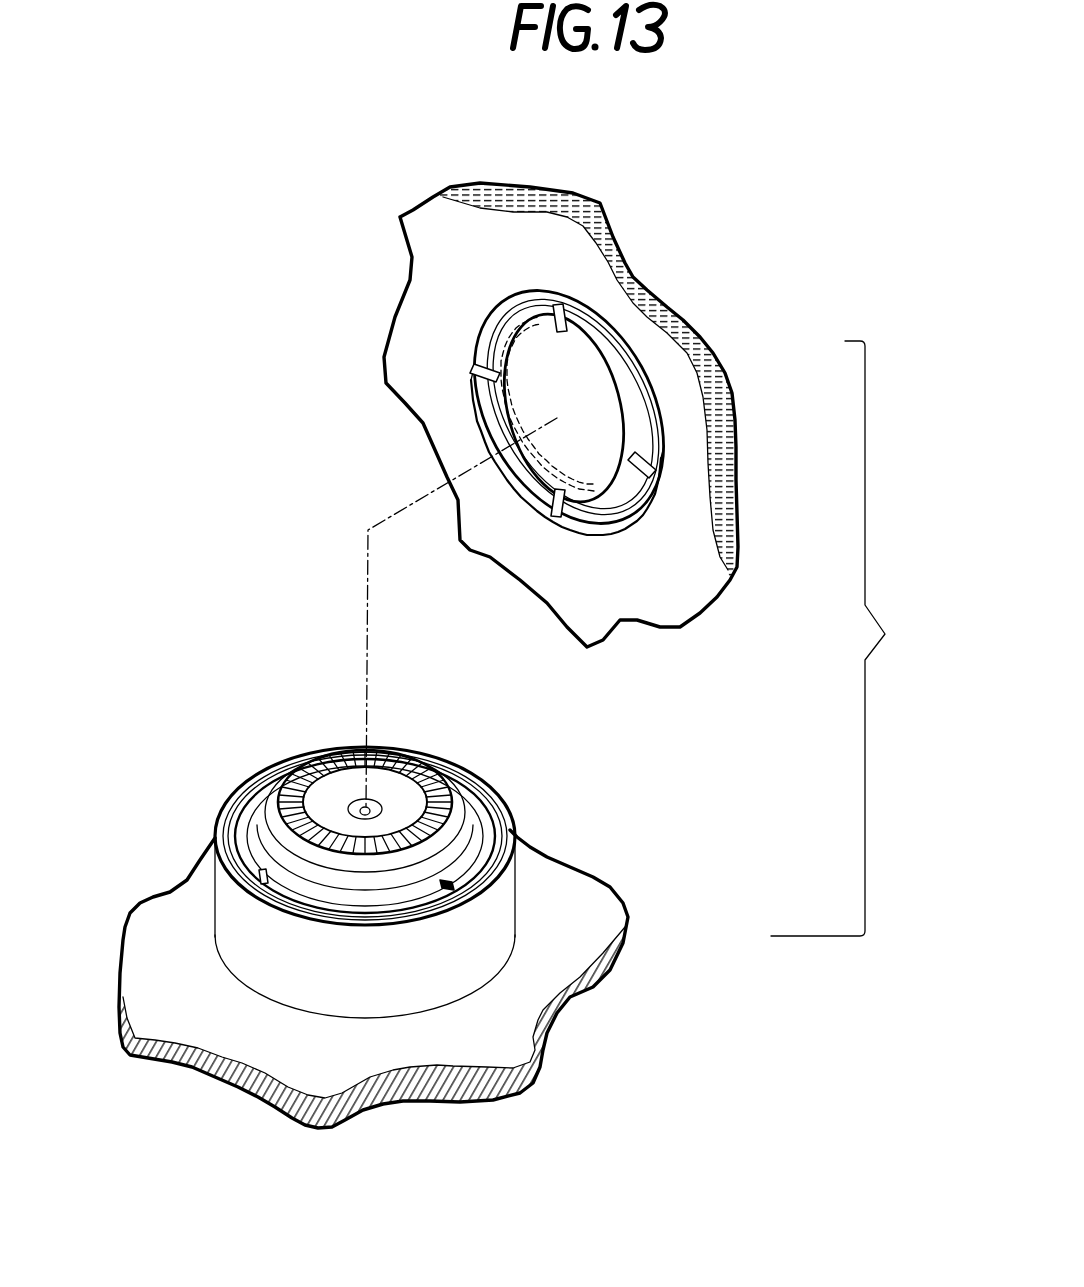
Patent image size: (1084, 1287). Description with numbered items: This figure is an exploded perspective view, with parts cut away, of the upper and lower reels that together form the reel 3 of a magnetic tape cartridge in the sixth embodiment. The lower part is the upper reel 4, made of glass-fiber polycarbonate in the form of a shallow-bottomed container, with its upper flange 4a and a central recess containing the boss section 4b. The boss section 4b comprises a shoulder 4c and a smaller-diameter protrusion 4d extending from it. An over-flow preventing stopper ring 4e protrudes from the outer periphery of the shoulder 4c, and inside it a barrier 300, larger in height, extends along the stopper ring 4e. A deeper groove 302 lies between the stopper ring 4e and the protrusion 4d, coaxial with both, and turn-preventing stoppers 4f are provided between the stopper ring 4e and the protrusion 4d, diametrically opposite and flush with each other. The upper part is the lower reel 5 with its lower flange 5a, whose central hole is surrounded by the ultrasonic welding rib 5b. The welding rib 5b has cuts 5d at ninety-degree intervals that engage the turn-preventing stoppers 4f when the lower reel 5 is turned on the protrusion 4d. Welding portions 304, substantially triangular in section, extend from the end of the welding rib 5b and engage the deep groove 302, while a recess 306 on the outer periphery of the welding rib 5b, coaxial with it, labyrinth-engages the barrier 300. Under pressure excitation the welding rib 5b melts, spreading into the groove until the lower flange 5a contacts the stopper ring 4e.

The reel 3 is at (853, 638).
The upper reel 4 is at (627, 927).
The upper flange 4a is at (520, 1022).
The boss section 4b is at (519, 907).
The shoulder 4c is at (450, 772).
The protrusion 4d is at (383, 777).
The stopper ring 4e is at (313, 915).
The turn-preventing stoppers 4f is at (263, 781).
The lower reel 5 is at (737, 350).
The lower flange 5a is at (642, 282).
The ultrasonic welding rib 5b is at (612, 362).
The cuts 5d is at (556, 310).
The barrier 300 is at (418, 910).
The groove 302 is at (267, 867).
The welding portions 304 is at (512, 480).
The recess 306 is at (655, 420).